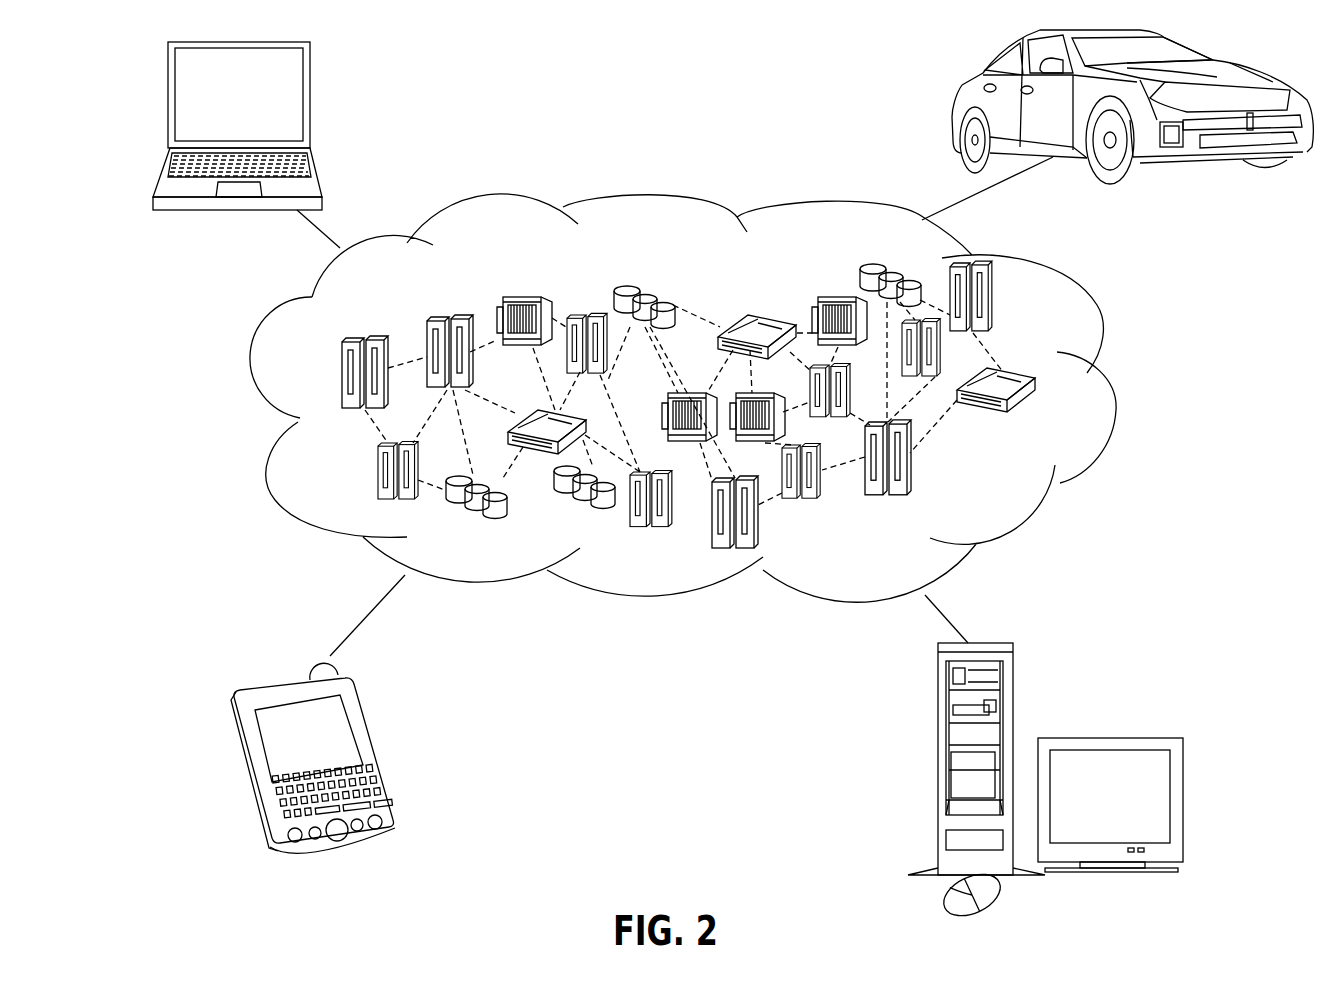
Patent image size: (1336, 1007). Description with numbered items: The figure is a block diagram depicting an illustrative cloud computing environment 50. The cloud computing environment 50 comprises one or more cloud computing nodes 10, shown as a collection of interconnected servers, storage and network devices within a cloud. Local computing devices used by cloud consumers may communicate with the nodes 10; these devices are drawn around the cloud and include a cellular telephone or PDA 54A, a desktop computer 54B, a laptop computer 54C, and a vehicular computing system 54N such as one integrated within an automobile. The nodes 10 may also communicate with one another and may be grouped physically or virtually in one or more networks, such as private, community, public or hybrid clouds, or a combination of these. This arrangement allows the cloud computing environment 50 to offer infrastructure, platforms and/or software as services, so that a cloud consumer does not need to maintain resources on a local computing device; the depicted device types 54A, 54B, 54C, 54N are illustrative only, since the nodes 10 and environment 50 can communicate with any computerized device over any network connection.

The cloud computing nodes 10 is at (1020, 495).
The cloud computing environment 50 is at (1112, 388).
The cellular telephone or PDA 54A is at (363, 718).
The desktop computer 54B is at (938, 703).
The laptop computer 54C is at (311, 78).
The vehicular computing system 54N is at (955, 98).